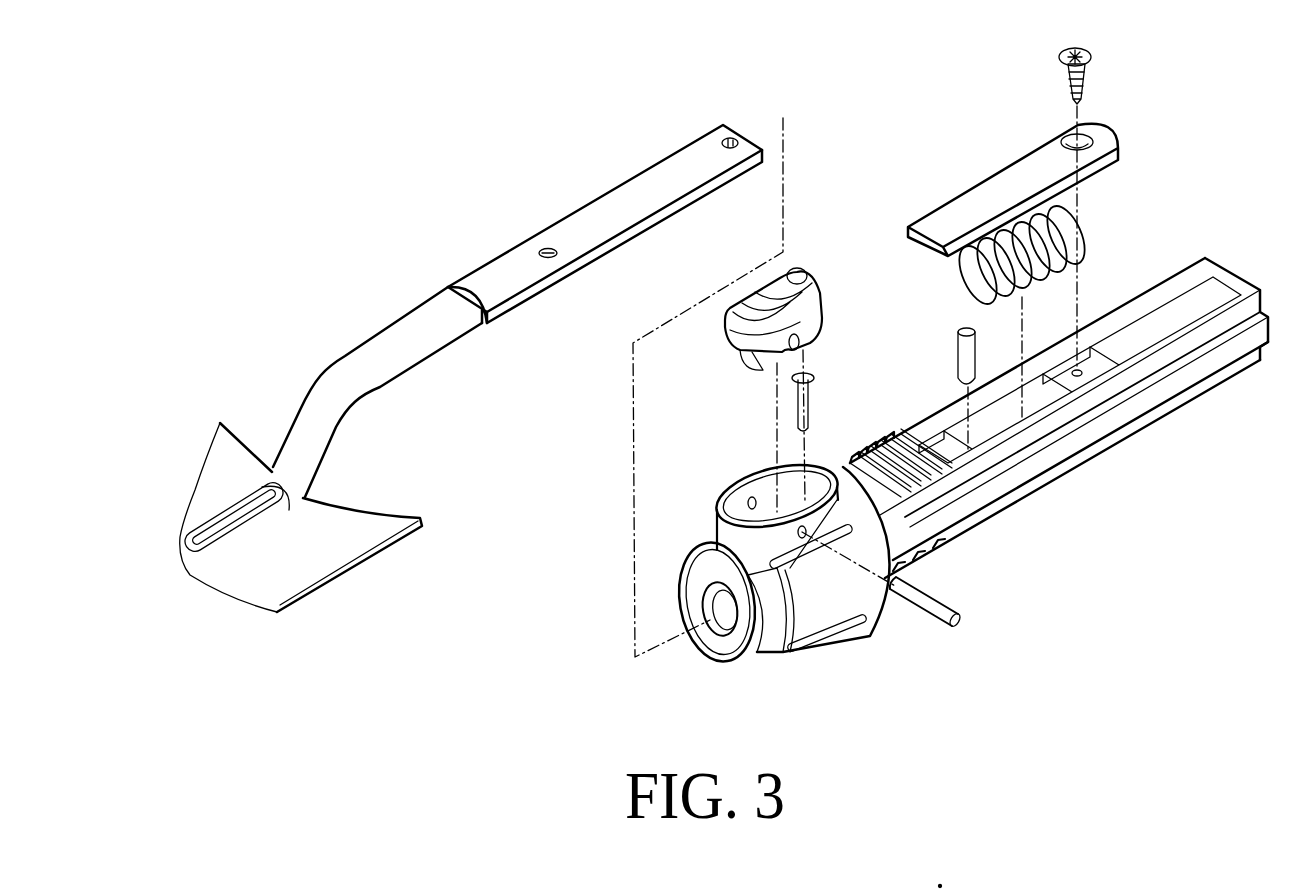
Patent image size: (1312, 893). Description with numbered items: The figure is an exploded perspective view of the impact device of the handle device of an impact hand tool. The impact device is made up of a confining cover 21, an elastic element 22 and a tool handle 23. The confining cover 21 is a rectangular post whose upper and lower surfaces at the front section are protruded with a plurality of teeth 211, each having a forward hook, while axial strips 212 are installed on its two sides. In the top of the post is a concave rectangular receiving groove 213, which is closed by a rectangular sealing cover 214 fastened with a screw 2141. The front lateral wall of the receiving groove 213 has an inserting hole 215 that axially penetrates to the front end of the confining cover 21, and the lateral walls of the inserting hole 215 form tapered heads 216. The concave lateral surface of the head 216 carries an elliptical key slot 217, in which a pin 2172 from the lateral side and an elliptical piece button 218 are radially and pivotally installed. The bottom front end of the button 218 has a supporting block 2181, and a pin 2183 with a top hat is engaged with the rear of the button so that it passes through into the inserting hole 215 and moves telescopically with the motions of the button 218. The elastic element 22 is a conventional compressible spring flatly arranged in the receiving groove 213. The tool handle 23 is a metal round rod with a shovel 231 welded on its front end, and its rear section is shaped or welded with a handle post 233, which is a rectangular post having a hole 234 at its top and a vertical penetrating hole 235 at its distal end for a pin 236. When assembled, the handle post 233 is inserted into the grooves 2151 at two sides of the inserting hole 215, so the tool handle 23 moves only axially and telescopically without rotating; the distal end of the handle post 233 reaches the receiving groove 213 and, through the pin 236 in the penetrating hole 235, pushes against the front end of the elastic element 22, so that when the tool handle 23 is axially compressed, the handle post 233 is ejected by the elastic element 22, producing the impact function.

The confining cover 21 is at (1048, 405).
The elastic element 22 is at (960, 275).
The tool handle 23 is at (343, 356).
The teeth 211 is at (873, 452).
The axial strips 212 is at (1050, 459).
The receiving groove 213 is at (1032, 380).
The sealing cover 214 is at (978, 187).
The inserting hole 215 is at (715, 623).
The tapered head 216 is at (818, 613).
The key slot 217 is at (740, 497).
The button 218 is at (748, 288).
The shovel 231 is at (228, 458).
The handle post 233 is at (488, 277).
The hole 234 is at (546, 252).
The penetrating hole 235 is at (727, 132).
The pin 236 is at (953, 365).
The screw 2141 is at (1067, 90).
The grooves 2151 is at (700, 603).
The pin 2172 is at (920, 607).
The supporting block 2181 is at (750, 372).
The pin with top hat 2183 is at (807, 403).